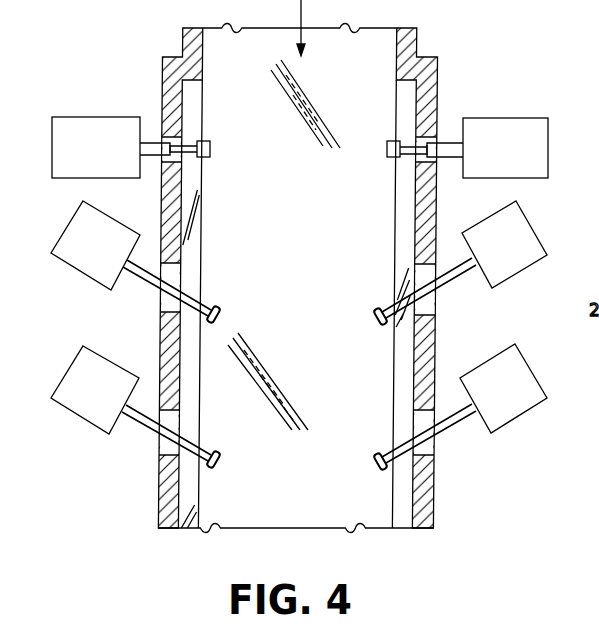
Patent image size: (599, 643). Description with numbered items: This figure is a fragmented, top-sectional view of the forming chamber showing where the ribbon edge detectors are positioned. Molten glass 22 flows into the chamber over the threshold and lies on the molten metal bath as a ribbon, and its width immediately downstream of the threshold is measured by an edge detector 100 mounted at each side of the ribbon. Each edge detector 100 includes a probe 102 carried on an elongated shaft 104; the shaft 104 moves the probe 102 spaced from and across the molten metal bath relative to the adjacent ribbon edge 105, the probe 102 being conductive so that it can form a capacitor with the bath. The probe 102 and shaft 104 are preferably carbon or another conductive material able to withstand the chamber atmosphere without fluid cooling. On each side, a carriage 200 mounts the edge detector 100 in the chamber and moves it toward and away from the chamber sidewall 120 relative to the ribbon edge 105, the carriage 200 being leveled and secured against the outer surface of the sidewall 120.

The molten glass 22 is at (356, 68).
The edge detector 100 is at (303, 117).
The probe 102 is at (208, 157).
The elongated shaft 104 is at (198, 143).
The ribbon edge 105 is at (202, 178).
The chamber sidewall 120 is at (165, 197).
The carriage 200 is at (92, 112).